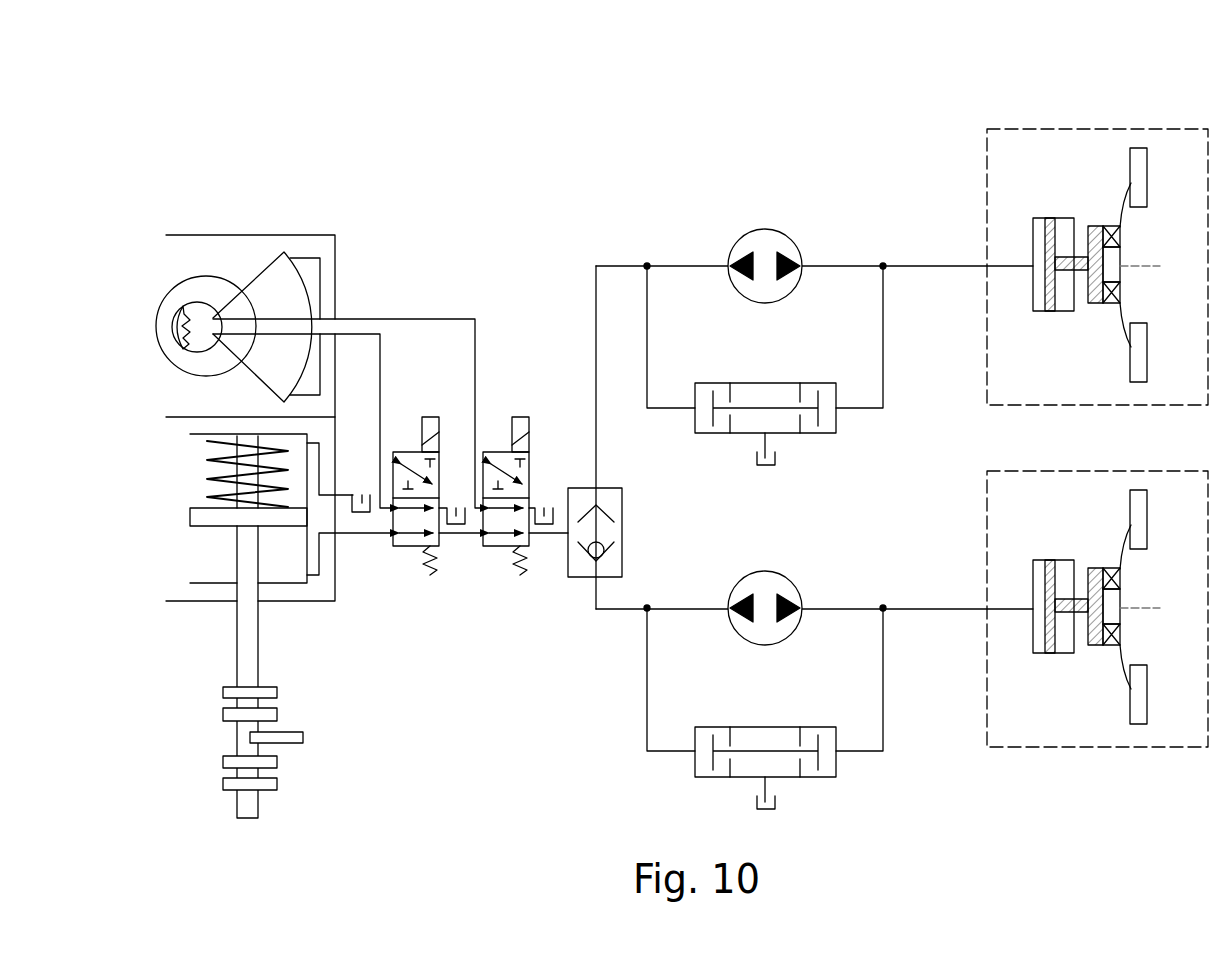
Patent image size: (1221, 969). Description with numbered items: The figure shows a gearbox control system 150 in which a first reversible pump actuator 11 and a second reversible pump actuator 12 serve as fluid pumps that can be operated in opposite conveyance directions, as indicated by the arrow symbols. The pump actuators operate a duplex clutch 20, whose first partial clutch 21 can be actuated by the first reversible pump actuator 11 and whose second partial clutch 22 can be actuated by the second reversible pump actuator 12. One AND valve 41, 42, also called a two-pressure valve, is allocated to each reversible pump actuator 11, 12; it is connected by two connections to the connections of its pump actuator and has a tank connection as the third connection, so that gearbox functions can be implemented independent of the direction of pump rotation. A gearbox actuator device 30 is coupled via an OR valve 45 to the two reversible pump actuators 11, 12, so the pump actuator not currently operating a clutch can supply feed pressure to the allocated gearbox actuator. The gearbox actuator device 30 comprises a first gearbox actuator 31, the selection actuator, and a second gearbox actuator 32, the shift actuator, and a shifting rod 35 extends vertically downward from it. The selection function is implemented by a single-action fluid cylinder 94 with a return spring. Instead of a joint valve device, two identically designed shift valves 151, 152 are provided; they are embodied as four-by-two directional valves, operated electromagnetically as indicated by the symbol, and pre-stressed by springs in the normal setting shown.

The gearbox actuator device 30 is at (178, 230).
The second gearbox actuator 32 is at (321, 230).
The first gearbox actuator 31 is at (307, 601).
The single-action fluid cylinder 94 is at (190, 583).
The shifting rod 35 is at (258, 800).
The shift valve 151 is at (412, 556).
The shift valve 152 is at (501, 434).
The OR valve 45 is at (589, 579).
The gearbox control system 150 is at (645, 243).
The first reversible pump actuator 11 is at (765, 229).
The second reversible pump actuator 12 is at (765, 571).
The AND valve 41 is at (836, 420).
The AND valve 42 is at (836, 764).
The duplex clutch 20 is at (1003, 125).
The first partial clutch 21 is at (1138, 129).
The second partial clutch 22 is at (1085, 748).